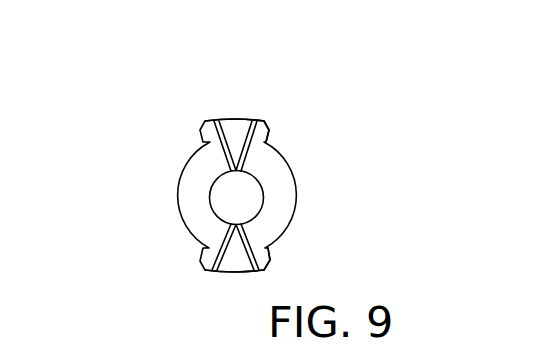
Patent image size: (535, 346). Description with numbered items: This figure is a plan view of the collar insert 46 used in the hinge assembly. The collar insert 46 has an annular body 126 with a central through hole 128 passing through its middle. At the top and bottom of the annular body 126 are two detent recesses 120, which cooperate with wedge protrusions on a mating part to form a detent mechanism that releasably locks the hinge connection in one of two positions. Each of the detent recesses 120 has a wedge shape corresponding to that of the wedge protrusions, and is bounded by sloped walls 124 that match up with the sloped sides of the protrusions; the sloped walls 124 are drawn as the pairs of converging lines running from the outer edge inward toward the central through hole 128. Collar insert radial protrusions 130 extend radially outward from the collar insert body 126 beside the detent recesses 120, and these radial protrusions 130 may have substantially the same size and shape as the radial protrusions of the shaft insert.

The collar insert 46 is at (229, 184).
The detent recesses 120 is at (235, 101).
The sloped walls 124 is at (214, 122).
The annular body 126 is at (190, 197).
The central through hole 128 is at (250, 196).
The collar insert radial protrusions 130 is at (264, 134).